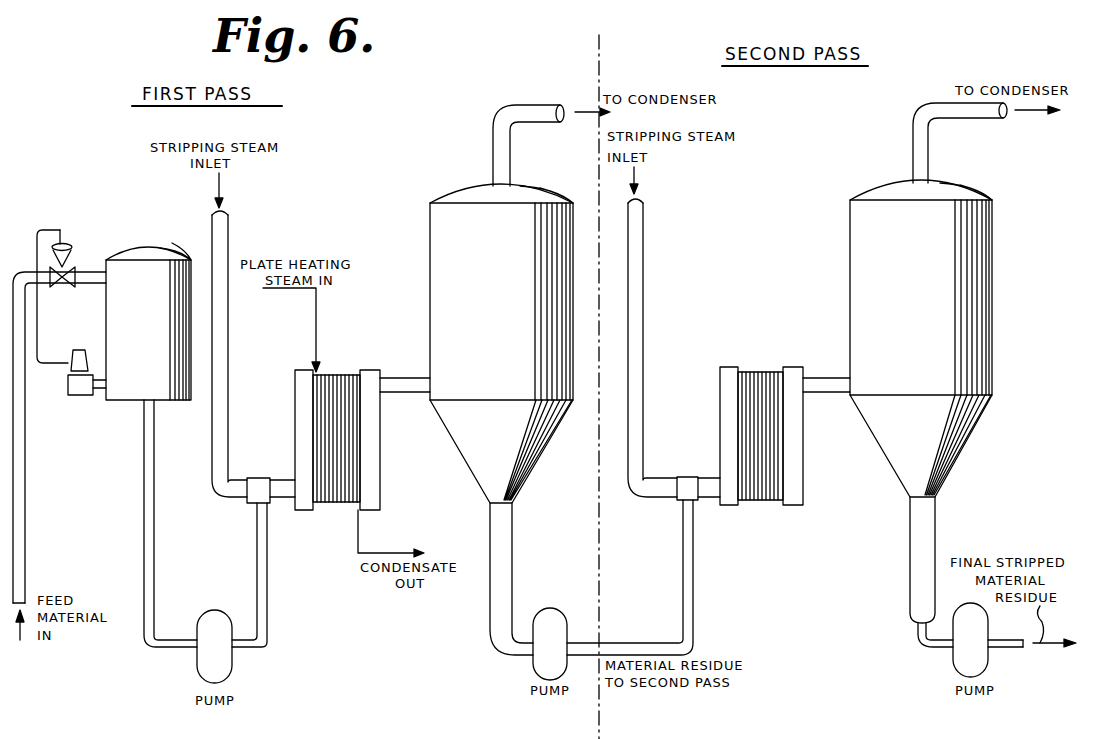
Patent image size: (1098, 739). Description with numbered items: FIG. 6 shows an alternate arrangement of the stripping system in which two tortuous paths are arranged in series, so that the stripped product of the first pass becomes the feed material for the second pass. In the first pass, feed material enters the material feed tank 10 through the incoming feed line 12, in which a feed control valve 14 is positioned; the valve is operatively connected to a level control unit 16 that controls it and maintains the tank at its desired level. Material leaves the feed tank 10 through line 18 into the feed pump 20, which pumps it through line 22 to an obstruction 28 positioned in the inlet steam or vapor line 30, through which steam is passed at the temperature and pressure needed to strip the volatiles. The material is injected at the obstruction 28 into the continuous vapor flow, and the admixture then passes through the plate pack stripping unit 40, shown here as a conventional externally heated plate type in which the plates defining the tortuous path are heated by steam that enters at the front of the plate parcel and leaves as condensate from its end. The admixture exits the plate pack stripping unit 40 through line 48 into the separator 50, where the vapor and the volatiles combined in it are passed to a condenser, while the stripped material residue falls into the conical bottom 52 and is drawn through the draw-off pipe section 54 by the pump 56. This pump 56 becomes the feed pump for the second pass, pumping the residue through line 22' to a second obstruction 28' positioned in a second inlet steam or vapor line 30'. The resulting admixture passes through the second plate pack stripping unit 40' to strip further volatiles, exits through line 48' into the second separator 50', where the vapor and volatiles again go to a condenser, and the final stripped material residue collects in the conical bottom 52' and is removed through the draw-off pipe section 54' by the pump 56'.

The material feed tank 10 is at (140, 276).
The incoming feed line 12 is at (27, 480).
The feed control valve 14 is at (70, 258).
The level control unit 16 is at (84, 391).
The line 18 is at (155, 538).
The feed pump 20 is at (211, 615).
The line 22 is at (273, 575).
The obstruction 28 is at (271, 473).
The inlet steam or vapor line 30 is at (246, 354).
The plate pack stripping unit 40 is at (337, 428).
The line 48 is at (403, 361).
The separator 50 is at (480, 252).
The conical bottom 52 is at (498, 451).
The draw-off pipe section 54 is at (486, 579).
The pump 56 is at (556, 629).
The line 22' is at (657, 577).
The obstruction 28' is at (694, 473).
The inlet steam or vapor line 30' is at (660, 348).
The plate pack stripping unit 40' is at (761, 418).
The line 48' is at (826, 361).
The separator 50' is at (907, 249).
The conical bottom 52' is at (912, 446).
The draw-off pipe section 54' is at (902, 572).
The pump 56' is at (956, 642).